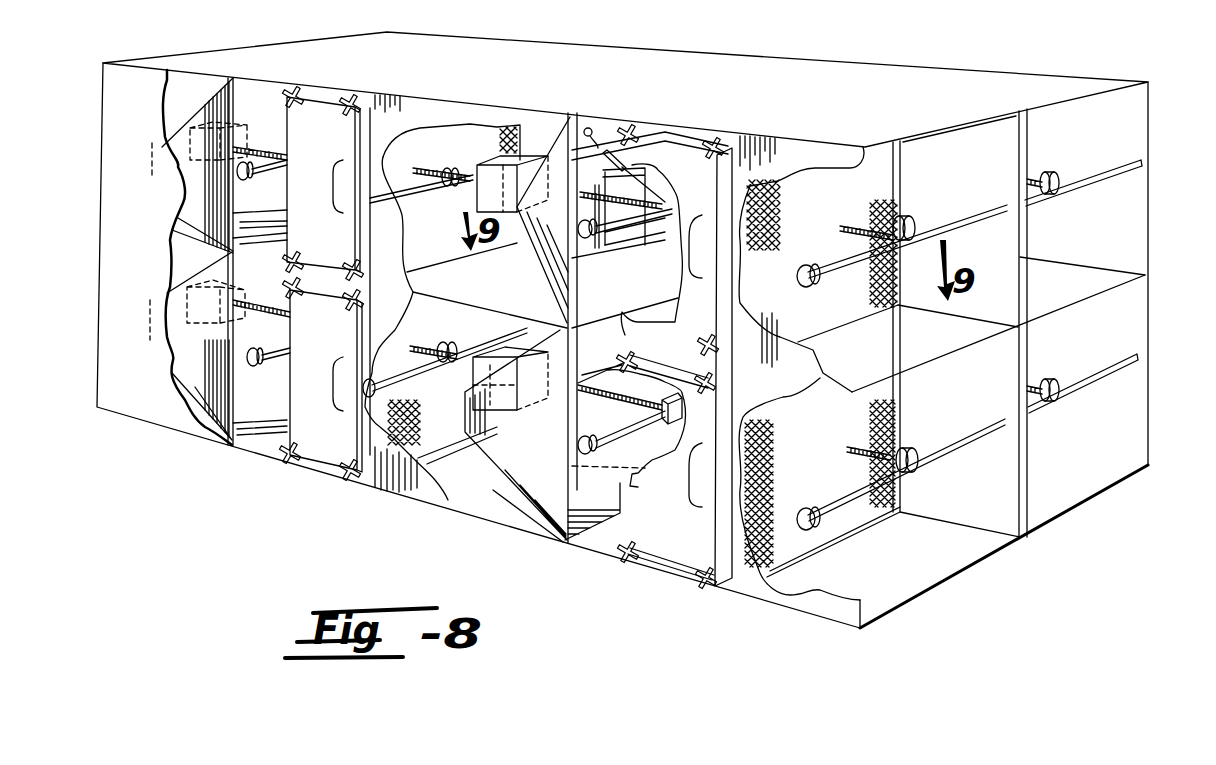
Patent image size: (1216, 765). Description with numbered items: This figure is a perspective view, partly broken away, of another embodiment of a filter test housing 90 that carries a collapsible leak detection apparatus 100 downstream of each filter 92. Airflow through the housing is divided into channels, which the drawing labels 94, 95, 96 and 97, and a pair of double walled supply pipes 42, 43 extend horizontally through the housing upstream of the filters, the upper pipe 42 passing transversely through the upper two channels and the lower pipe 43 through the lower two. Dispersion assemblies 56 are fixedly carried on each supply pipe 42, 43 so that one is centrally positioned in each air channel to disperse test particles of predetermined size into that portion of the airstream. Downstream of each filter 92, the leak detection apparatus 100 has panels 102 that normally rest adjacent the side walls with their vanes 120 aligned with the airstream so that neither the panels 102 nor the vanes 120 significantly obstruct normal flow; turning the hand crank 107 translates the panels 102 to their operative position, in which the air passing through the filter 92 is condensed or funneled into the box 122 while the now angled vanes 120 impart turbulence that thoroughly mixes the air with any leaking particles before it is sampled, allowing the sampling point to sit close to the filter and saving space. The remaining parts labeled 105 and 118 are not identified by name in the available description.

The enclosure 90 is at (826, 26).
The filter 92 is at (447, 137).
The compartment 94 is at (1010, 258).
The shelf 95 is at (920, 352).
The compartment 96 is at (1005, 485).
The shelf 97 is at (1072, 298).
The upper supply pipe 42 is at (1125, 148).
The lower supply pipe 43 is at (1120, 355).
The dispersion assembly 56 is at (438, 202).
The collapsible leak detection apparatus 100 is at (186, 93).
The panel 102 is at (207, 190).
The door 105 is at (698, 193).
The hand crank 107 is at (249, 173).
The strut 118 is at (608, 137).
The vane 120 is at (587, 128).
The box 122 is at (175, 128).